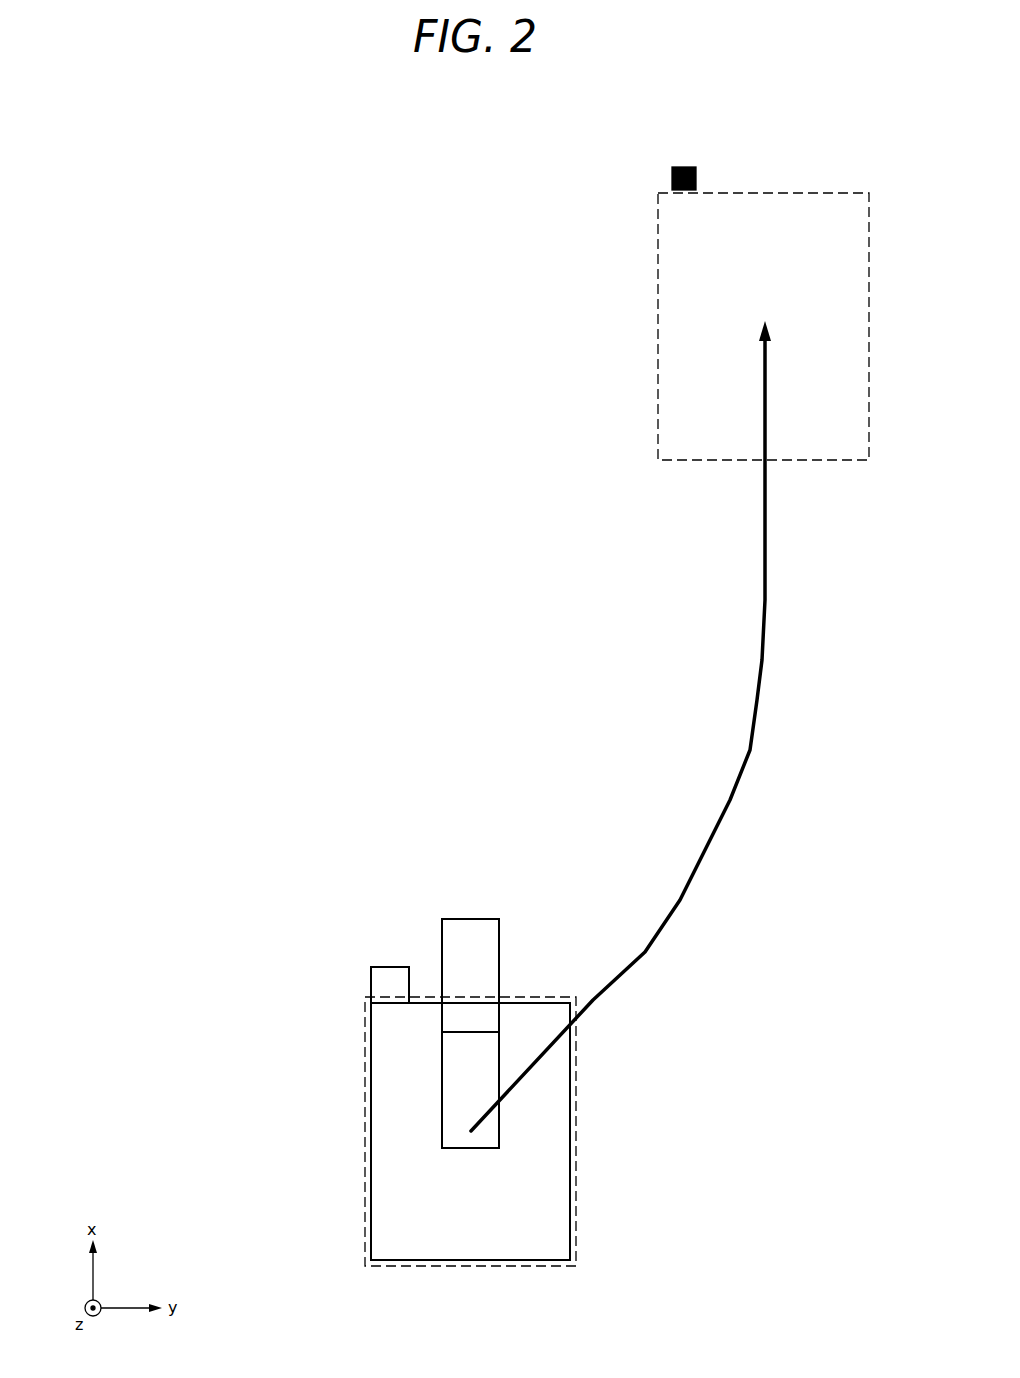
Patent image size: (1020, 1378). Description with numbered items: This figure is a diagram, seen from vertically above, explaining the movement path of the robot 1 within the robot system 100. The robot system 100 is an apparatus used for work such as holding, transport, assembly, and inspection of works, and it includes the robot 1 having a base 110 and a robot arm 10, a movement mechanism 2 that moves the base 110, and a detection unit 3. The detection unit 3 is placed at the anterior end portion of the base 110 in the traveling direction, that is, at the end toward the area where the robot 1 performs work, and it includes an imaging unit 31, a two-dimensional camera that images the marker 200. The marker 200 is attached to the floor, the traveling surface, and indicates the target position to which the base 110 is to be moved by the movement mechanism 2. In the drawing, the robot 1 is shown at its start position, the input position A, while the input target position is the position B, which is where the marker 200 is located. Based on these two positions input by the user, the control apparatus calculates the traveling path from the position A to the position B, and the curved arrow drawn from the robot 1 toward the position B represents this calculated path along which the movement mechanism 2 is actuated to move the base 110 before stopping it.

The robot system 100 is at (271, 248).
The marker 200 is at (687, 167).
The position B is at (830, 192).
The base 110 is at (548, 1067).
The position A is at (576, 1174).
The robot 1 is at (326, 998).
The movement mechanism 2 is at (415, 1128).
The imaging unit 31 is at (390, 947).
The detection unit 3 is at (389, 966).
The robot arm 10 is at (500, 1128).